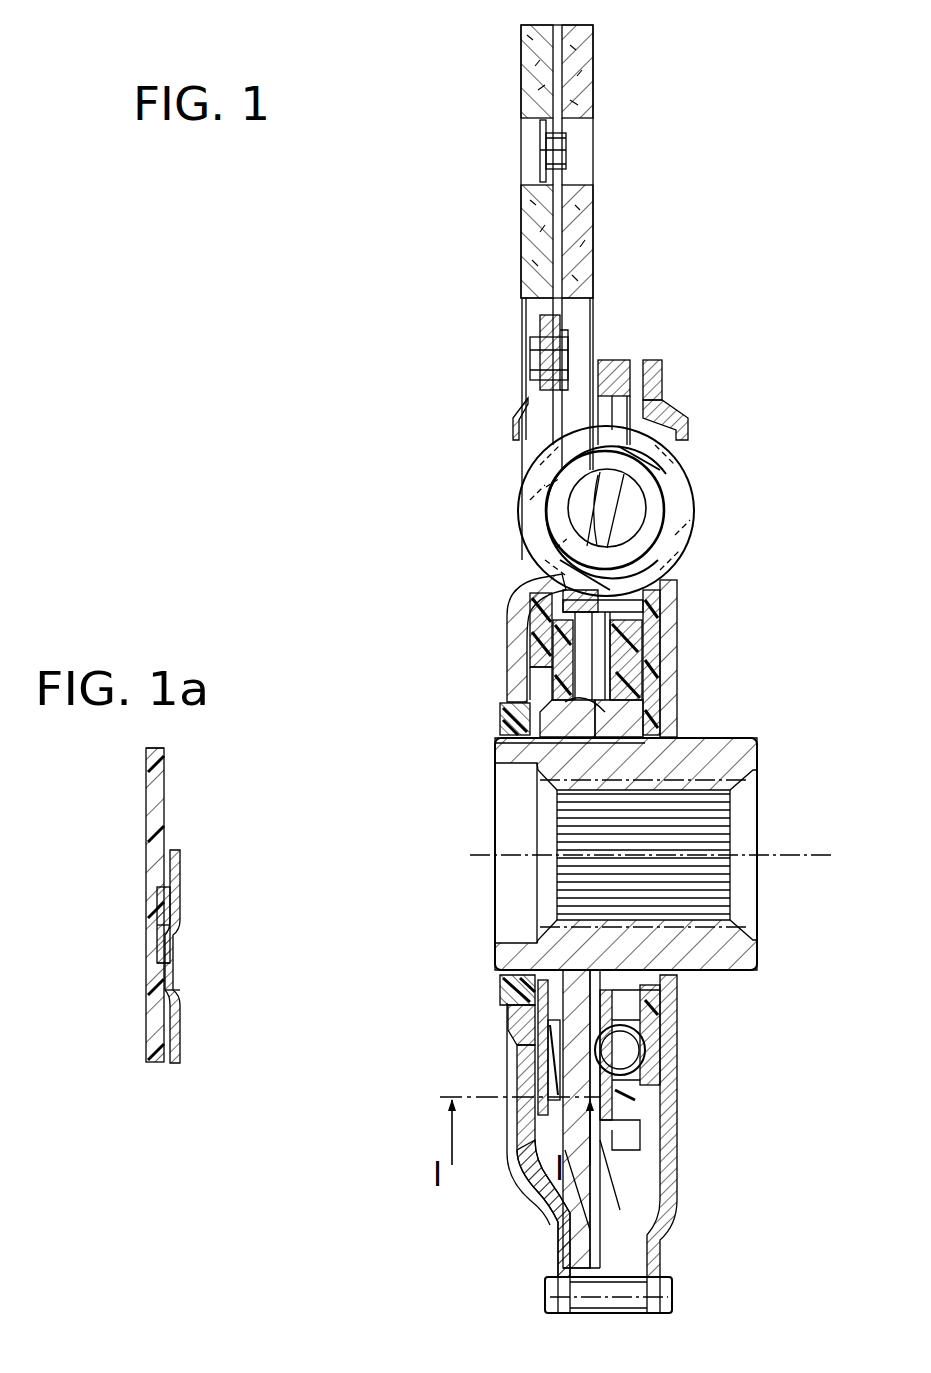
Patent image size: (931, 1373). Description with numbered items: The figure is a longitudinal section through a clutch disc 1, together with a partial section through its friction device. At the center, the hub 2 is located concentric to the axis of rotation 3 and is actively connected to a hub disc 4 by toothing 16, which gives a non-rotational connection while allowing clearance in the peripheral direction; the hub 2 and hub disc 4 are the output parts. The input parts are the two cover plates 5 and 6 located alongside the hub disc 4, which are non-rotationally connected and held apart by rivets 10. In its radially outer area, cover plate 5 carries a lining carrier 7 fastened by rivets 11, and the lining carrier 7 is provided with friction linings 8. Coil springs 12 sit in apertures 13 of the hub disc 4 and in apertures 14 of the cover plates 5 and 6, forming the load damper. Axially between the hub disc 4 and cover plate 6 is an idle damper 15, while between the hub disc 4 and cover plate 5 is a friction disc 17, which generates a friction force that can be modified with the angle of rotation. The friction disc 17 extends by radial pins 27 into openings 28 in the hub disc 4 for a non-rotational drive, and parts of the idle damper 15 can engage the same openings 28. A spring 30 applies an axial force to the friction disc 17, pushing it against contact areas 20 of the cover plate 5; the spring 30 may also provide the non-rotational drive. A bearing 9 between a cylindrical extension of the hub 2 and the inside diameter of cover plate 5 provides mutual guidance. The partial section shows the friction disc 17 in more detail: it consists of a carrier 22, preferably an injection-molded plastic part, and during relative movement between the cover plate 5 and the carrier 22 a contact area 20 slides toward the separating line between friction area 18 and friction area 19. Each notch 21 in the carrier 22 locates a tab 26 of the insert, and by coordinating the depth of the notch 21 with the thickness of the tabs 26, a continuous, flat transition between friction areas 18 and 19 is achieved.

In FIG. 1, the clutch disc 1 is at (455, 282).
In FIG. 1, the hub 2 is at (742, 952).
In FIG. 1, the axis of rotation 3 is at (795, 855).
In FIG. 1, the hub disc 4 is at (620, 1225).
In FIG. 1, the cover plate 5 is at (560, 1216).
In FIG. 1a, the cover plate 5 is at (180, 863).
In FIG. 1, the cover plate 6 is at (655, 1232).
In FIG. 1, the lining carrier 7 is at (560, 302).
In FIG. 1, the friction linings 8 is at (535, 240).
In FIG. 1, the bearing 9 is at (520, 985).
In FIG. 1, the rivets 10 is at (665, 1300).
In FIG. 1, the rivets 11 is at (532, 355).
In FIG. 1, the coil springs 12 is at (680, 498).
In FIG. 1, the apertures 13 is at (612, 366).
In FIG. 1, the apertures 14 is at (685, 520).
In FIG. 1, the idle damper 15 is at (652, 1139).
In FIG. 1, the toothing 16 is at (650, 700).
In FIG. 1, the friction disc 17 is at (512, 628).
In FIG. 1a, the friction area 18 is at (170, 808).
In FIG. 1a, the friction area 19 is at (170, 890).
In FIG. 1, the contact area 20 is at (514, 1062).
In FIG. 1a, the contact area 20 is at (173, 985).
In FIG. 1a, the notch 21 is at (160, 930).
In FIG. 1a, the carrier 22 is at (164, 776).
In FIG. 1a, the tab 26 is at (168, 948).
In FIG. 1, the radial pins 27 is at (602, 640).
In FIG. 1, the openings 28 is at (535, 580).
In FIG. 1, the spring 30 is at (520, 1030).